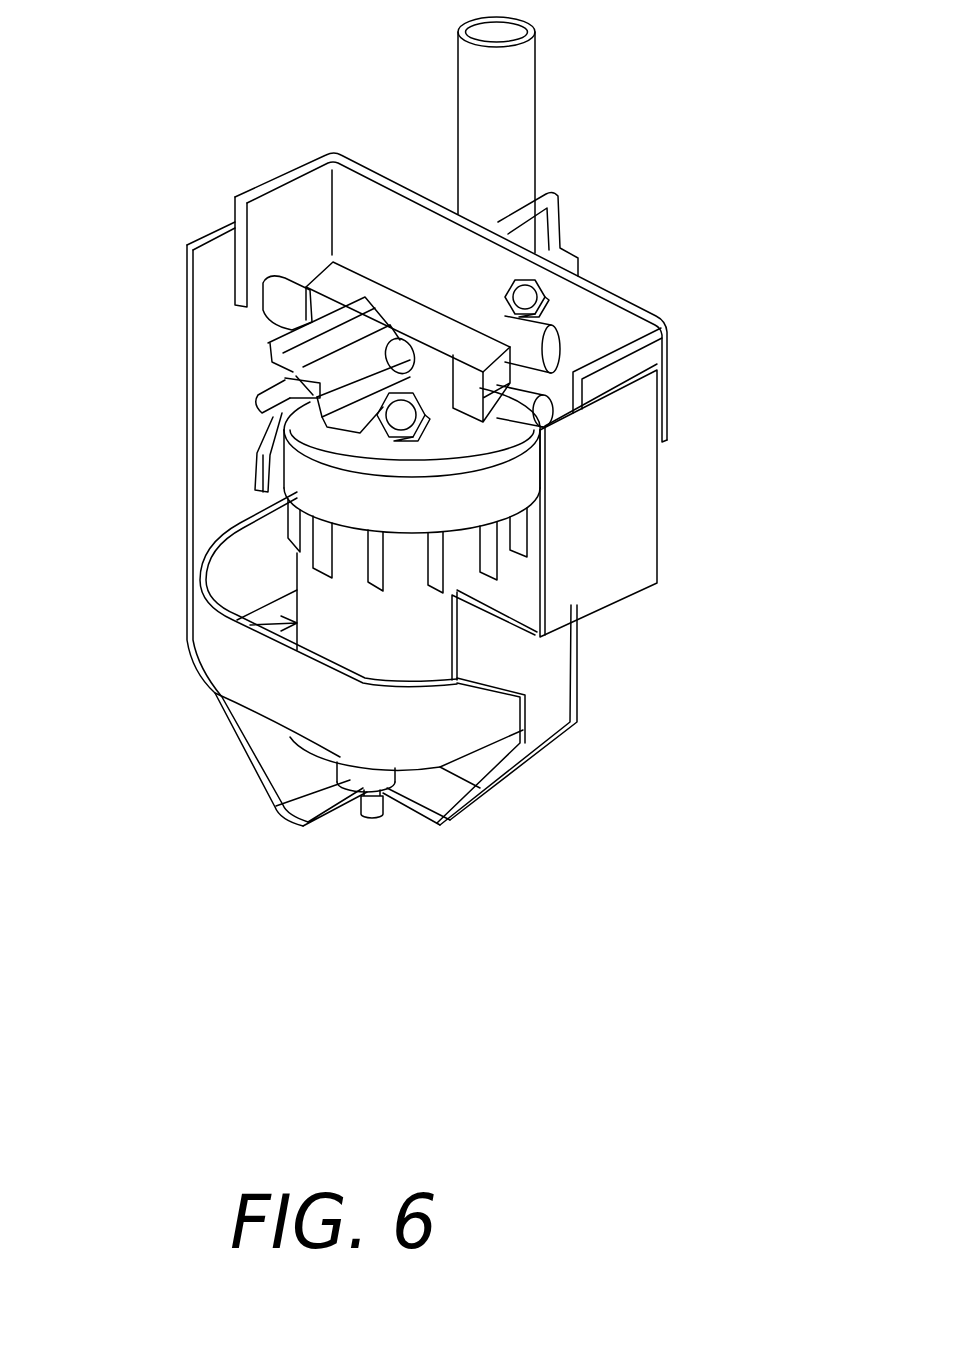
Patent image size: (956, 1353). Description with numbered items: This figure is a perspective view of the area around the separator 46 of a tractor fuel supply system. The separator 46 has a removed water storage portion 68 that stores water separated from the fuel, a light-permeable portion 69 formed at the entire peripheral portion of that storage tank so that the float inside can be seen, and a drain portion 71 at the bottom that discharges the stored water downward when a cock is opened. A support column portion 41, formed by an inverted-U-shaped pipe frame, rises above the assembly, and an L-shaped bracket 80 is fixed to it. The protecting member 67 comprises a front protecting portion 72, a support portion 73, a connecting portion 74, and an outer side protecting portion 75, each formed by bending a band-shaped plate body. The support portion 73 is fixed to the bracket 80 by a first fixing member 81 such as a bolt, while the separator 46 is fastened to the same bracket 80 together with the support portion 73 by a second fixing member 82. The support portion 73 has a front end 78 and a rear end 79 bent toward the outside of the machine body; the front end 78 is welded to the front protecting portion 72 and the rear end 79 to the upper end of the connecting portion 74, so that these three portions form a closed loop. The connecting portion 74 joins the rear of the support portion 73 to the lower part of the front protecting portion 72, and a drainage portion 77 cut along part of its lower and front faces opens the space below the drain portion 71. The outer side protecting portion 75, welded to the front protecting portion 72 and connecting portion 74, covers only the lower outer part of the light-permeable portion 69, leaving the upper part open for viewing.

The support column portion 41 is at (513, 123).
The separator 46 is at (250, 625).
The protecting member 67 is at (587, 797).
The removed water storage portion 68 is at (323, 615).
The light-permeable portion 69 is at (417, 638).
The drain portion 71 is at (370, 817).
The front protecting portion 72 is at (620, 477).
The support portion 73 is at (418, 235).
The connecting portion 74 is at (288, 760).
The outer side protecting portion 75 is at (243, 672).
The drainage portion 77 is at (408, 813).
The front end 78 is at (623, 373).
The rear end 79 is at (276, 178).
The L-shaped bracket 80 is at (557, 193).
The first fixing member 81 is at (523, 300).
The second fixing member 82 is at (400, 420).